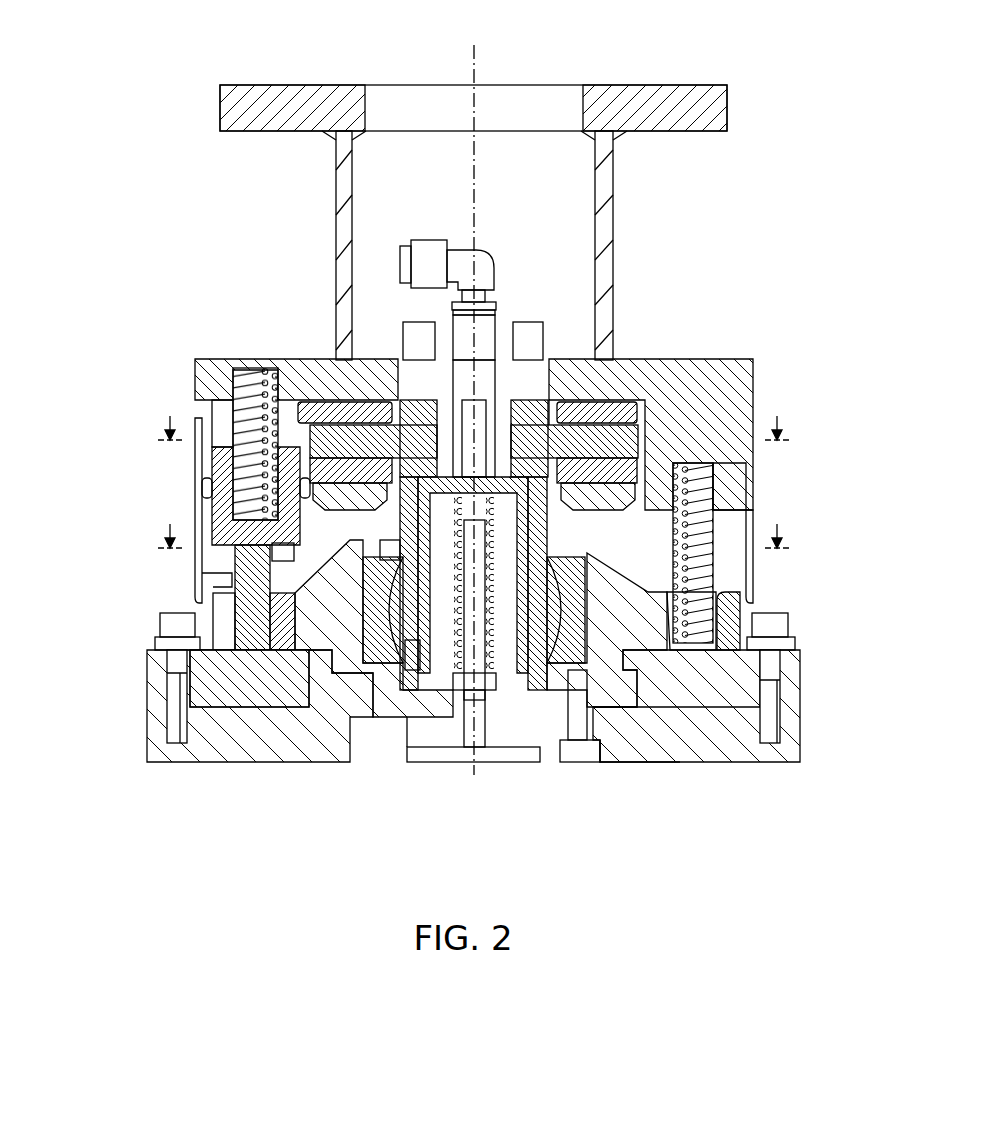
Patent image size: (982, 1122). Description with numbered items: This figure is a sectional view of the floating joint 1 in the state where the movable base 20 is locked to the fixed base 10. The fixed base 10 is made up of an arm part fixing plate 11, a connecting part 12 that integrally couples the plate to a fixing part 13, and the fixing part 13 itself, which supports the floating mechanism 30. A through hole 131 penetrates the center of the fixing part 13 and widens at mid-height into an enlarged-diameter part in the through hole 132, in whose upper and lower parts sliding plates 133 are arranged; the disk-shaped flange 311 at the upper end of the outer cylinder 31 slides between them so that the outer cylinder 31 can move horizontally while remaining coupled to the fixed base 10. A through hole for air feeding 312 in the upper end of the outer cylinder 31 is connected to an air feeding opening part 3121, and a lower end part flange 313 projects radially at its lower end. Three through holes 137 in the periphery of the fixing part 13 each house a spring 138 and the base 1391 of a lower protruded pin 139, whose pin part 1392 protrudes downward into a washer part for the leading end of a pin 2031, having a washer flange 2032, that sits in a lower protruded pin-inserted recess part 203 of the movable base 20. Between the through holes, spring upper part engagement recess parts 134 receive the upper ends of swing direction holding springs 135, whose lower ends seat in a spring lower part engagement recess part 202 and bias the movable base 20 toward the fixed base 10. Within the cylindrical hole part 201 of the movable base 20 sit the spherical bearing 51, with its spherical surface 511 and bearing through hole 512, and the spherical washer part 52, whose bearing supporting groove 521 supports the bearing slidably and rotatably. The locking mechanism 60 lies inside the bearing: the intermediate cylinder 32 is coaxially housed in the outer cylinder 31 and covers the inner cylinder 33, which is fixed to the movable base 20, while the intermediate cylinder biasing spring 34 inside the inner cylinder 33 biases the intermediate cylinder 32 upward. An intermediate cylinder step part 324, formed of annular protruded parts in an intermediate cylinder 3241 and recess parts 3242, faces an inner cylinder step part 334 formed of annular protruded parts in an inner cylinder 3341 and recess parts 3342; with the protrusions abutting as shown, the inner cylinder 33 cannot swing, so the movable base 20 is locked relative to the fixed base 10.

The floating joint 1 is at (126, 333).
The fixed base 10 is at (229, 76).
The arm part fixing plate 11 is at (640, 78).
The connecting part 12 is at (614, 191).
The fixing part 13 is at (754, 372).
The through hole 131 is at (362, 462).
The enlarged-diameter part in the through hole 132 is at (600, 470).
The sliding plate 133 is at (362, 447).
The spring upper part engagement recess part 134 is at (745, 466).
The swing direction holding spring 135 is at (713, 490).
The through hole 137 is at (258, 368).
The spring 138 is at (235, 374).
The lower protruded pin 139 is at (186, 584).
The base 1391 is at (214, 483).
The pin part 1392 is at (214, 630).
The movable base 20 is at (138, 745).
The cylindrical hole part 201 is at (596, 720).
The spring lower part engagement recess part 202 is at (776, 630).
The lower protruded pin-inserted recess part 203 is at (190, 705).
The washer part for the leading end of a pin 2031 is at (176, 652).
The washer flange 2032 is at (166, 640).
The floating mechanism 30 is at (80, 360).
The outer cylinder 31 is at (650, 455).
The flange 311 is at (590, 430).
The through hole for air feeding 312 is at (412, 398).
The air feeding opening part 3121 is at (432, 250).
The lower end part flange 313 is at (560, 720).
The intermediate cylinder 32 is at (528, 660).
The intermediate cylinder step part 324 is at (770, 795).
The annular protruded part in an intermediate cylinder 3241 is at (662, 722).
The recess part 3242 is at (652, 742).
The inner cylinder 33 is at (446, 705).
The inner cylinder step part 334 is at (188, 850).
The annular protruded part in an inner cylinder 3341 is at (330, 655).
The recess part 3342 is at (360, 655).
The intermediate cylinder biasing spring 34 is at (480, 700).
The spherical bearing 51 is at (388, 640).
The spherical surface 511 is at (700, 540).
The bearing through hole 512 is at (705, 578).
The spherical washer part 52 is at (340, 660).
The bearing supporting groove 521 is at (414, 680).
The locking mechanism 60 is at (503, 722).